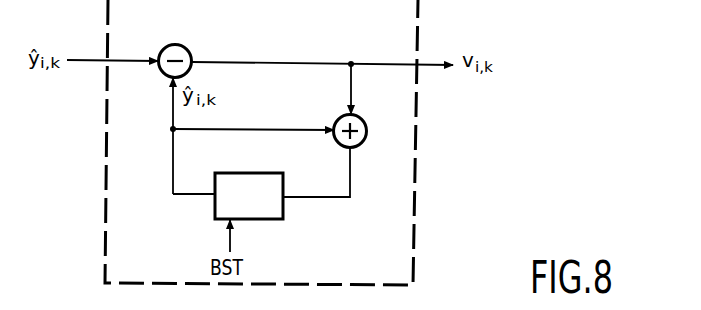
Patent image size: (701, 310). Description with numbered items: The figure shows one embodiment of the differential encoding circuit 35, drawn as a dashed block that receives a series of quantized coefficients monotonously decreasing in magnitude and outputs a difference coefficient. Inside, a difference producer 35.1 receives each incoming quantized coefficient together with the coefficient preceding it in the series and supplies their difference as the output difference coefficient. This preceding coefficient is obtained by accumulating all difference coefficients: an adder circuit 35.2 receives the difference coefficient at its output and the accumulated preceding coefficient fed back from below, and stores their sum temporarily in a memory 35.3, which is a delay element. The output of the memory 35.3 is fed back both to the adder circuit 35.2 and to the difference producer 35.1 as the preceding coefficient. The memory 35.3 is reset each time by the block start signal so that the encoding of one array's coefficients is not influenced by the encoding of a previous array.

The differential encoding circuit 35 is at (281, 142).
The difference producer 35.1 is at (174, 43).
The adder circuit 35.2 is at (361, 151).
The memory 35.3 is at (253, 211).